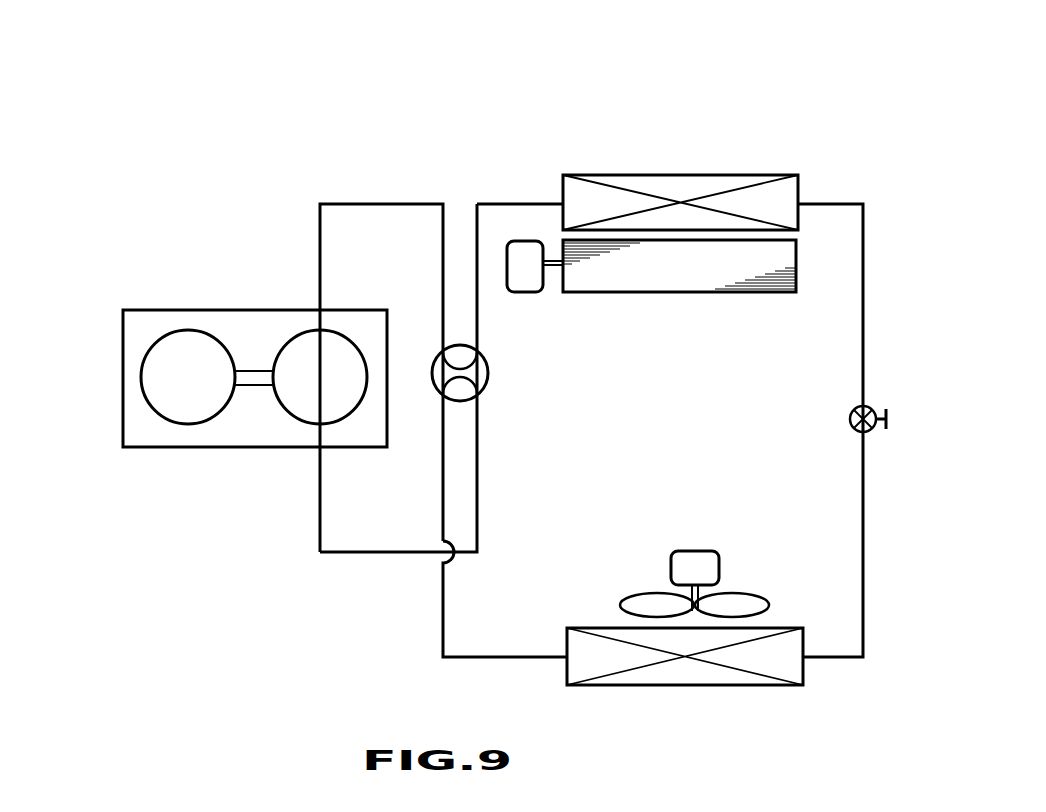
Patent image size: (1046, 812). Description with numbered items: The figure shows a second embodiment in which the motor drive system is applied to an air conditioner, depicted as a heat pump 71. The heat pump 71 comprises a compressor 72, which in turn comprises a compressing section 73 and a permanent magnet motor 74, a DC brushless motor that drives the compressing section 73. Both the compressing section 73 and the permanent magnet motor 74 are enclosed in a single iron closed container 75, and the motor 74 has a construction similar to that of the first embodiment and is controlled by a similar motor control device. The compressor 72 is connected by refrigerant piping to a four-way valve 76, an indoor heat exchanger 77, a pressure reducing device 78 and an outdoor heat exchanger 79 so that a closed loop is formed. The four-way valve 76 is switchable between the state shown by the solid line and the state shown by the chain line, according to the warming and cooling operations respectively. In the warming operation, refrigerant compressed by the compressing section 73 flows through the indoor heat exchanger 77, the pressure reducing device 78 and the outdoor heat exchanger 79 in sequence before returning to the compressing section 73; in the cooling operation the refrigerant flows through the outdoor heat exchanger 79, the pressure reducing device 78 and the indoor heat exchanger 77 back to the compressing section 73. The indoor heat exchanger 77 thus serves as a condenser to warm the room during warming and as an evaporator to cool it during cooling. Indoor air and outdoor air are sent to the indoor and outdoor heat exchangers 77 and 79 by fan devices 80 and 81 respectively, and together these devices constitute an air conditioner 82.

The heat pump 71 is at (462, 200).
The compressor 72 is at (202, 405).
The compressing section 73 is at (296, 427).
The permanent magnet motor 74 is at (183, 424).
The closed container 75 is at (123, 352).
The four-way valve 76 is at (490, 368).
The indoor heat exchanger 77 is at (683, 173).
The pressure reducing device 78 is at (850, 419).
The outdoor heat exchanger 79 is at (684, 690).
The fan device 80 is at (675, 293).
The fan device 81 is at (668, 590).
The air conditioner 82 is at (591, 332).